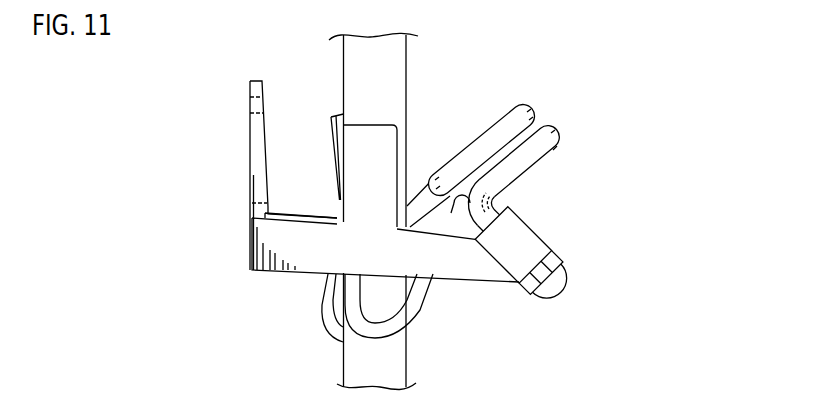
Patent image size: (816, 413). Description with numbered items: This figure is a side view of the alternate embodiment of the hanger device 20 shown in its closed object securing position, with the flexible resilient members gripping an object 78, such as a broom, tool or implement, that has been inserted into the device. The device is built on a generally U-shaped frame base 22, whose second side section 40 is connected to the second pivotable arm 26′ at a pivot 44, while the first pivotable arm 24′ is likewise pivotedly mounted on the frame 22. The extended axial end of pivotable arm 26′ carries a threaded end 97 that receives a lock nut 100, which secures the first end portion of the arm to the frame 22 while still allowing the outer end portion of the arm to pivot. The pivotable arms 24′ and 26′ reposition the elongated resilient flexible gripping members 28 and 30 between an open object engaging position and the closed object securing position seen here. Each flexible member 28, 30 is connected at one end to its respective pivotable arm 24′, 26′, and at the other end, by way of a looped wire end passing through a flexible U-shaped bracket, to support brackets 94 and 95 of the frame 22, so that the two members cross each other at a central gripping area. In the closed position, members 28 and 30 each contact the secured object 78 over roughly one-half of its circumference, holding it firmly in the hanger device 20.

The hanger device 20 is at (184, 106).
The frame base 22 is at (244, 165).
The first pivotable arm 24′ is at (485, 125).
The second pivotable arm 26′ is at (543, 160).
The first elongated flexible gripping member 28 is at (312, 324).
The second elongated flexible gripping member 30 is at (421, 316).
The second side section 40 is at (482, 283).
The pivot 44 is at (523, 220).
The secured object 78 is at (410, 50).
The support bracket 94 is at (382, 125).
The support bracket 95 is at (331, 117).
The threaded end 97 is at (553, 292).
The lock nut 100 is at (556, 259).